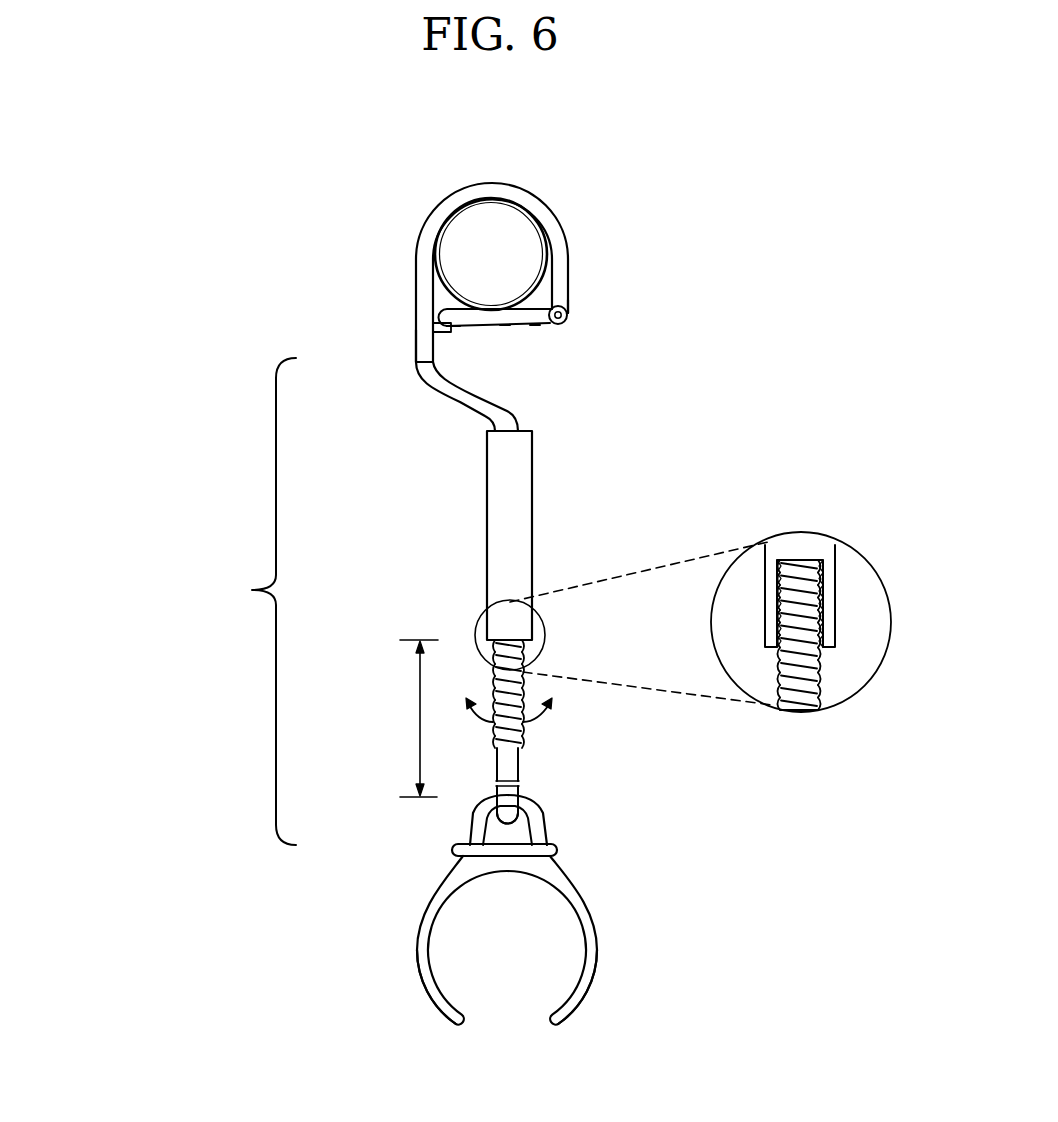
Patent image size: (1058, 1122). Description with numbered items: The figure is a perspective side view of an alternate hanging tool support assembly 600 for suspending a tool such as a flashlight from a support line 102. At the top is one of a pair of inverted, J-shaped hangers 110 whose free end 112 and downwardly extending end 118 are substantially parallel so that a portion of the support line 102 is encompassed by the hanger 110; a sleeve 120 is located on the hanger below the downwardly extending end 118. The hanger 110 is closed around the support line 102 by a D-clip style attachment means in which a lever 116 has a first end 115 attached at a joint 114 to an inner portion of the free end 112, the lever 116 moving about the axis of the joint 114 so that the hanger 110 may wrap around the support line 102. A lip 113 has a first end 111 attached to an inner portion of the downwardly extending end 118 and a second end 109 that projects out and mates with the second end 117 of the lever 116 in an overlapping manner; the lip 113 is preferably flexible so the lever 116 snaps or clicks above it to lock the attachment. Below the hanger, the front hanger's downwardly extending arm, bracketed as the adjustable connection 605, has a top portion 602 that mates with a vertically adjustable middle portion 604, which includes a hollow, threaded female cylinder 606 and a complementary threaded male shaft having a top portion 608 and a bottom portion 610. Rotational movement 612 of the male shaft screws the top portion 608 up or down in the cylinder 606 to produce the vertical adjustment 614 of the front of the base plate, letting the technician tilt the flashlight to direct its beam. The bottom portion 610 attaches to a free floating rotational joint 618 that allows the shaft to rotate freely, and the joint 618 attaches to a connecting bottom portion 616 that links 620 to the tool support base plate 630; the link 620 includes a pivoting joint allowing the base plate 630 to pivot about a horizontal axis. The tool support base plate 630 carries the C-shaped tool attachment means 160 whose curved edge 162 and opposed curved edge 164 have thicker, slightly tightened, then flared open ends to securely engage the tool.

The hanging tool support assembly 600 is at (140, 527).
The adjustable connector assembly 605 is at (244, 601).
The inverted J-shaped hanger 110 is at (493, 183).
The support line 102 is at (510, 225).
The second end of lever 117 is at (452, 310).
The free end 112 is at (570, 300).
The joint 114 is at (561, 323).
The downwardly extending end 118 is at (415, 357).
The sleeve 120 is at (415, 364).
The first end of lip 111 is at (447, 332).
The second end of lip 109 is at (448, 326).
The lip 113 is at (452, 330).
The first end of lever 115 is at (533, 327).
The lever 116 is at (503, 327).
The top portion 602 is at (457, 407).
The vertically adjustable middle portion 604 is at (532, 502).
The threaded female cylinder 606 is at (808, 565).
The top portion of male shaft 608 is at (797, 573).
The bottom portion 610 is at (523, 734).
The rotational movement 612 is at (535, 714).
The vertical adjustment 614 is at (418, 727).
The free floating rotational joint 618 is at (497, 783).
The link 620 is at (545, 823).
The connecting bottom portion 616 is at (505, 818).
The tool support base plate 630 is at (558, 850).
The tool attachment means 160 is at (535, 862).
The curved edge 162 is at (595, 965).
The opposed curved edge 164 is at (422, 982).